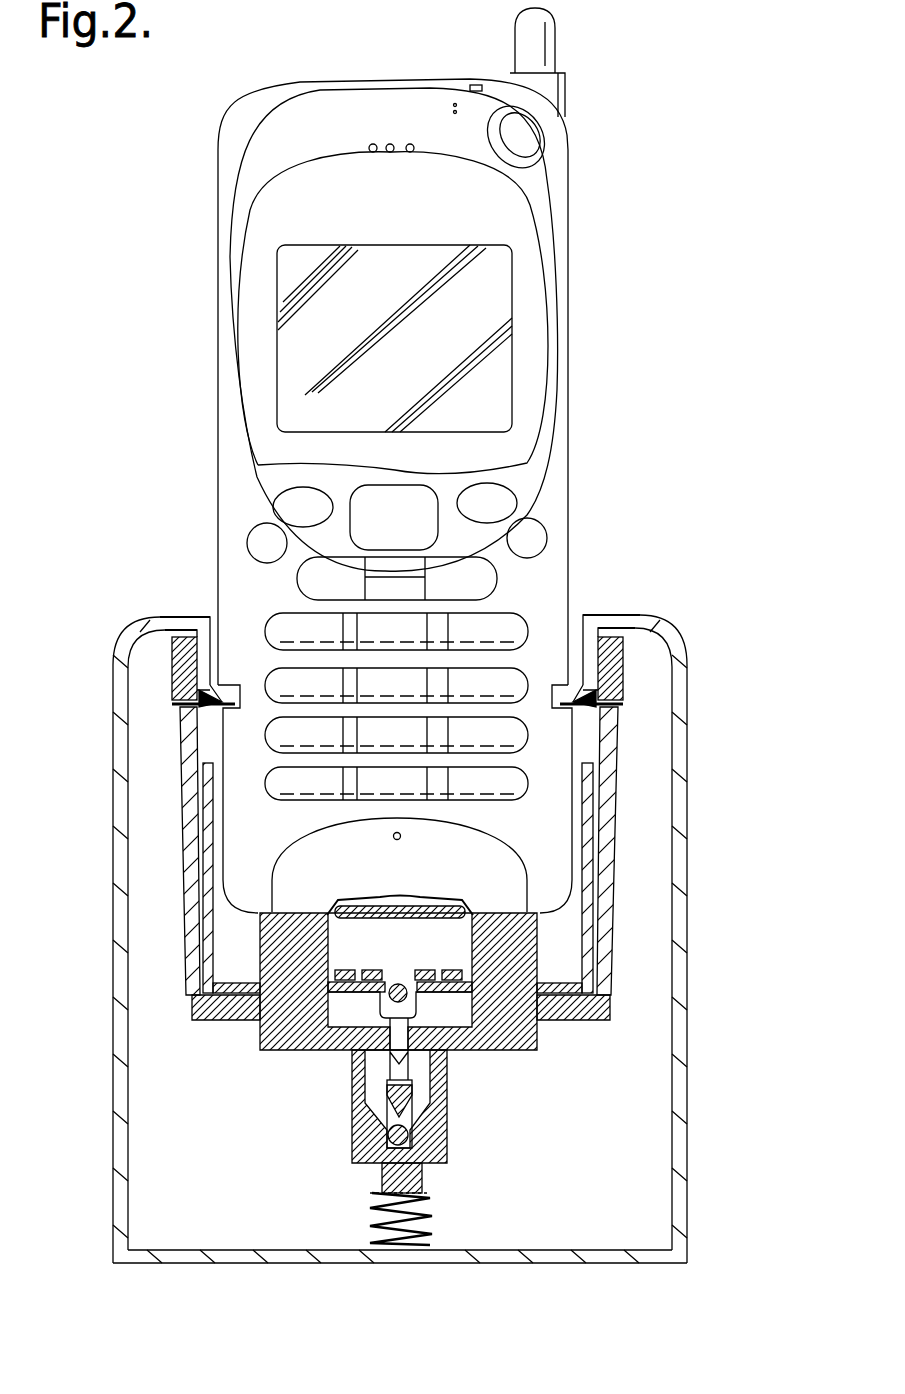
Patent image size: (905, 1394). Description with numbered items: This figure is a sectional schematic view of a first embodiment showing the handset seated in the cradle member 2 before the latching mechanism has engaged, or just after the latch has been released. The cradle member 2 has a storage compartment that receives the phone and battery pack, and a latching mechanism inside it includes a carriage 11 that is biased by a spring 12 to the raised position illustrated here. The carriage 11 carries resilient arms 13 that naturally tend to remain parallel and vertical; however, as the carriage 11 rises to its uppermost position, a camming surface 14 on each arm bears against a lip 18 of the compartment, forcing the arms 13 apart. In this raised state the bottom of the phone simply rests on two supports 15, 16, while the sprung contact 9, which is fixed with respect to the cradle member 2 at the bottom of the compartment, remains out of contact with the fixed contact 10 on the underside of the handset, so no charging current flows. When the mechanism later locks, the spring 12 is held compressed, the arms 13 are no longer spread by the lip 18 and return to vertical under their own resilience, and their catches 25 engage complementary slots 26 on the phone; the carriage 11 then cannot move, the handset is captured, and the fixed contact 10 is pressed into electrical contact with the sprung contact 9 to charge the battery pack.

The cradle member 2 is at (683, 910).
The sprung contact 9 is at (475, 992).
The fixed contact 10 is at (475, 990).
The carriage 11 is at (614, 847).
The spring 12 is at (433, 1214).
The resilient arms 13 is at (184, 782).
The camming surface 14 is at (178, 628).
The support 15 is at (447, 917).
The support 16 is at (258, 933).
The lip 18 is at (200, 632).
The catches 25 is at (182, 712).
The complementary slots 26 is at (211, 650).